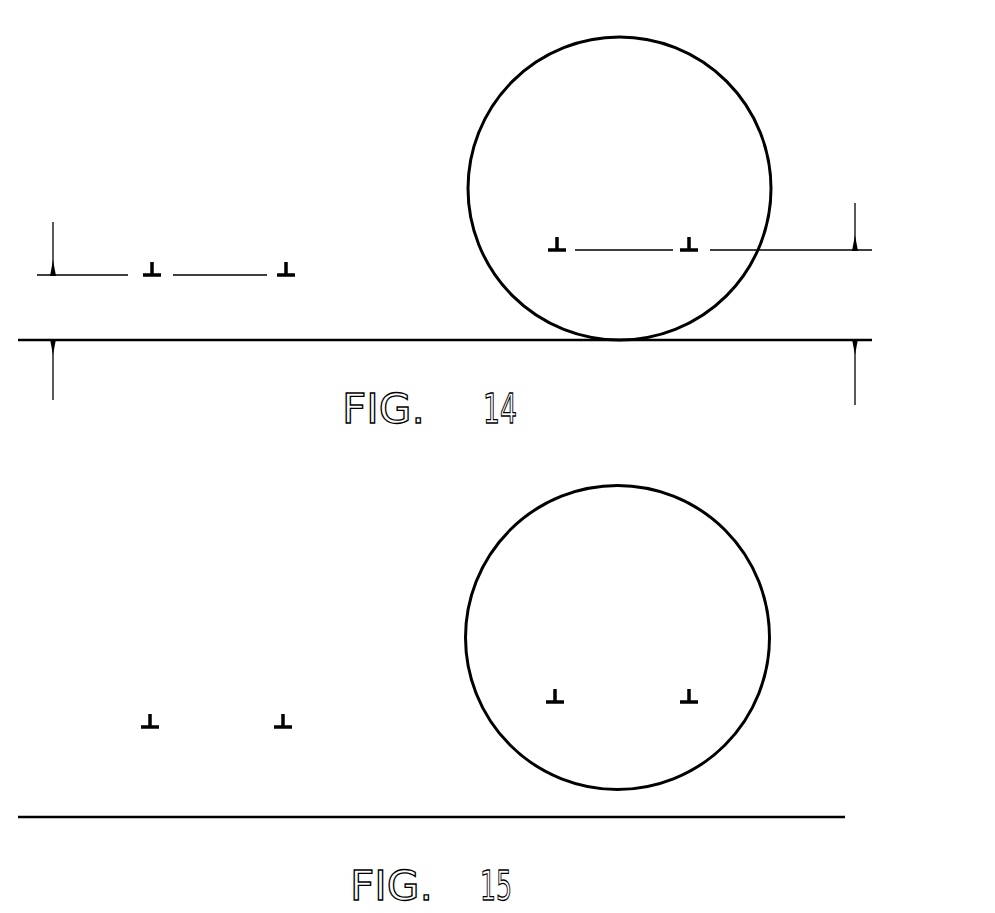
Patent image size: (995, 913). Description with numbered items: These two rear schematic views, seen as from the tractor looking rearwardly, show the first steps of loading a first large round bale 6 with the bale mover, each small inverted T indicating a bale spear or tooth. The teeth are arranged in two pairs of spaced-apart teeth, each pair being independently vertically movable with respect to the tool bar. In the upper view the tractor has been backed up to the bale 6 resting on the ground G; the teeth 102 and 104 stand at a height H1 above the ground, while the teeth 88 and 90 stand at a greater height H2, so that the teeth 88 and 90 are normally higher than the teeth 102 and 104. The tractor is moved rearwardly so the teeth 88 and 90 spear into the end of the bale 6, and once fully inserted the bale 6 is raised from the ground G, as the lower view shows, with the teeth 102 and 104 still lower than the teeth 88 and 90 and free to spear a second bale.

In FIG. 14, the first large round bale 6 is at (760, 133).
In FIG. 15, the first large round bale 6 is at (732, 537).
In FIG. 14, the bale tooth 88 is at (692, 243).
In FIG. 15, the bale tooth 88 is at (689, 688).
In FIG. 14, the bale tooth 90 is at (560, 243).
In FIG. 15, the bale tooth 90 is at (556, 688).
In FIG. 14, the bale tooth 102 is at (154, 268).
In FIG. 15, the bale tooth 102 is at (152, 719).
In FIG. 14, the bale tooth 104 is at (289, 268).
In FIG. 15, the bale tooth 104 is at (286, 719).
In FIG. 14, the ground G is at (743, 340).
In FIG. 15, the ground G is at (760, 817).
In FIG. 14, the height of teeth 102 and 104 H1 is at (152, 311).
In FIG. 14, the height of teeth 88 and 90 H2 is at (725, 304).